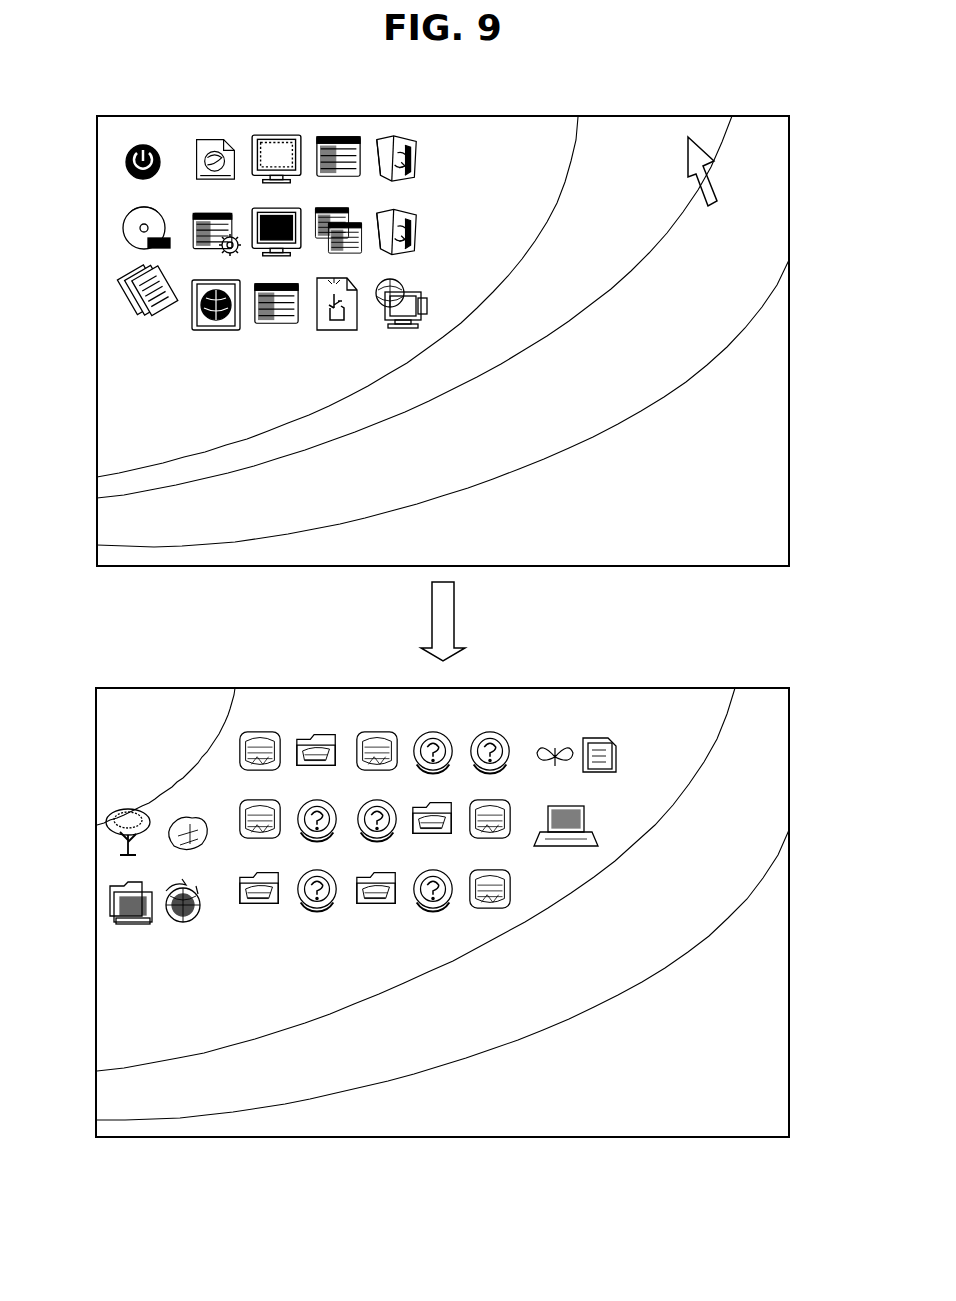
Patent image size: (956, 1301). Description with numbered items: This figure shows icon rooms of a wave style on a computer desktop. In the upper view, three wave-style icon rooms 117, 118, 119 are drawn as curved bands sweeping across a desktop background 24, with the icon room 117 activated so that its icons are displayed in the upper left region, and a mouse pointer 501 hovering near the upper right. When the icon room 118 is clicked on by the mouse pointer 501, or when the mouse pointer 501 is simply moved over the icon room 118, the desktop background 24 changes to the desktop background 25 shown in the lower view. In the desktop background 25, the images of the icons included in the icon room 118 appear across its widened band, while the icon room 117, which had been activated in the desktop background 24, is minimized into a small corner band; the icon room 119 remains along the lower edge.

The desktop background 24 is at (439, 596).
The desktop background 25 is at (789, 978).
The icon room 117 is at (110, 410).
The icon room 118 is at (100, 490).
The icon room 119 is at (100, 535).
The mouse pointer 501 is at (691, 139).